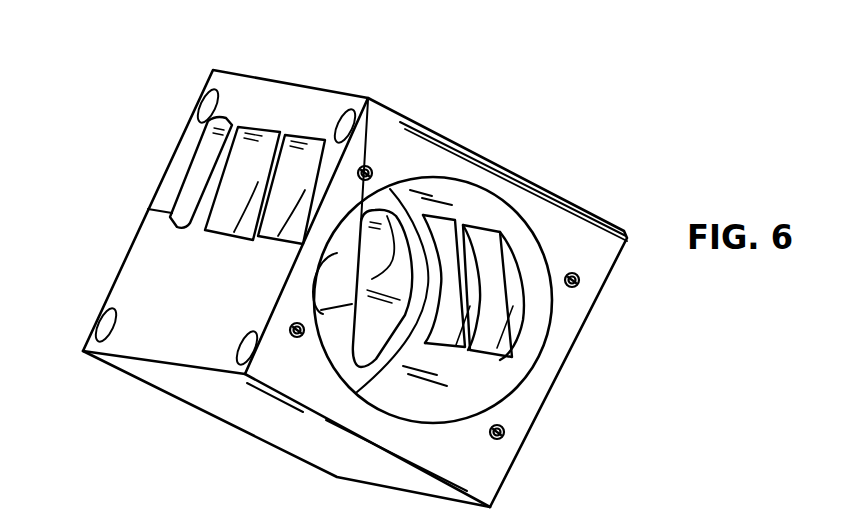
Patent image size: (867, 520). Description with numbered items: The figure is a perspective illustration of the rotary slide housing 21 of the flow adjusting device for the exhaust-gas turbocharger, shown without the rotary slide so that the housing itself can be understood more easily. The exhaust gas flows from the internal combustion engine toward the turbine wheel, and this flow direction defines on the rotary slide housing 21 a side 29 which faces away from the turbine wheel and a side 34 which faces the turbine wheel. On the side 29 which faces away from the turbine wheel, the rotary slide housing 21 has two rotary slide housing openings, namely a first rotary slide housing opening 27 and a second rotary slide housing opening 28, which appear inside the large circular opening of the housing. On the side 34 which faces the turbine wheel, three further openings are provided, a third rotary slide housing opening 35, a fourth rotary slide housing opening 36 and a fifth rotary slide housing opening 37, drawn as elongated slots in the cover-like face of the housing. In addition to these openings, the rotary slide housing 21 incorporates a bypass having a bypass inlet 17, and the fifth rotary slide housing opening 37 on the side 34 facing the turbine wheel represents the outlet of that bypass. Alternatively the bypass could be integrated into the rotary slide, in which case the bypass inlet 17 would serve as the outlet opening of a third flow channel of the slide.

The bypass inlet 17 is at (399, 234).
The rotary slide housing 21 is at (130, 284).
The first rotary slide housing opening 27 is at (520, 240).
The second rotary slide housing opening 28 is at (459, 238).
The side which faces away from the turbine wheel 29 is at (590, 343).
The side which faces the turbine wheel 34 is at (178, 348).
The third rotary slide housing opening 35 is at (301, 160).
The fourth rotary slide housing opening 36 is at (253, 157).
The fifth rotary slide housing opening 37 is at (197, 185).